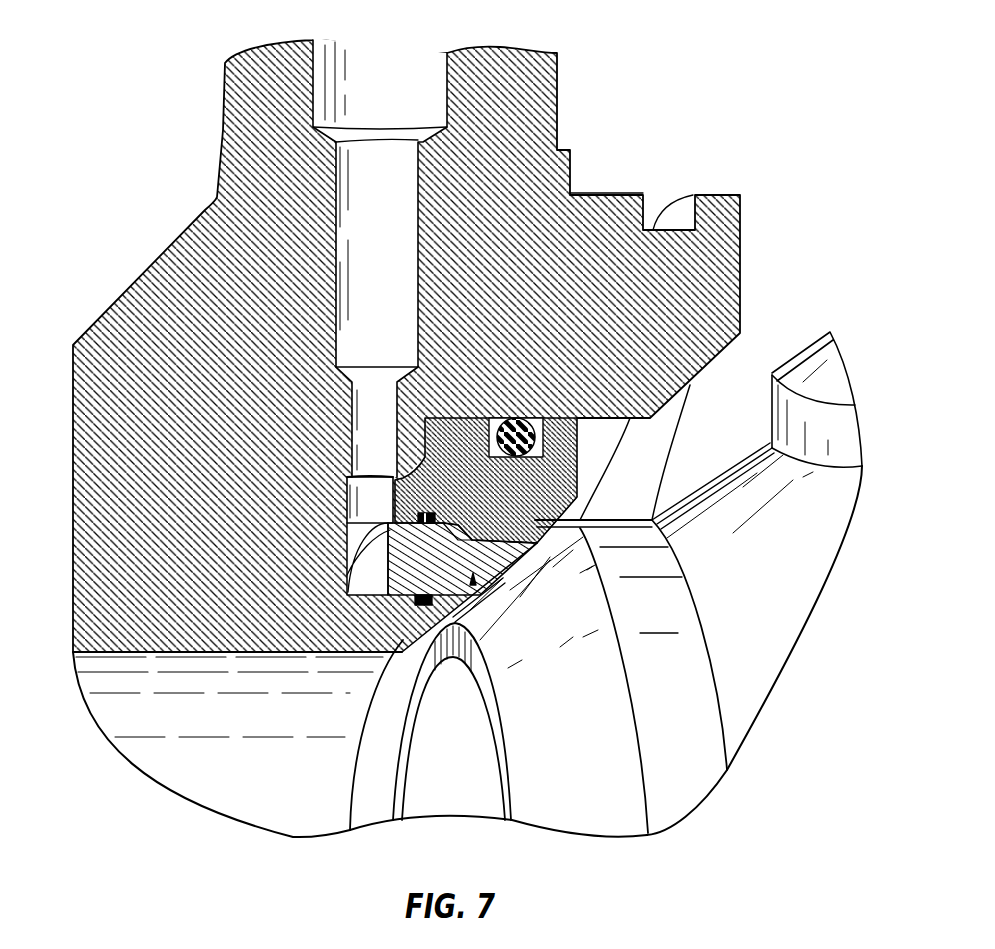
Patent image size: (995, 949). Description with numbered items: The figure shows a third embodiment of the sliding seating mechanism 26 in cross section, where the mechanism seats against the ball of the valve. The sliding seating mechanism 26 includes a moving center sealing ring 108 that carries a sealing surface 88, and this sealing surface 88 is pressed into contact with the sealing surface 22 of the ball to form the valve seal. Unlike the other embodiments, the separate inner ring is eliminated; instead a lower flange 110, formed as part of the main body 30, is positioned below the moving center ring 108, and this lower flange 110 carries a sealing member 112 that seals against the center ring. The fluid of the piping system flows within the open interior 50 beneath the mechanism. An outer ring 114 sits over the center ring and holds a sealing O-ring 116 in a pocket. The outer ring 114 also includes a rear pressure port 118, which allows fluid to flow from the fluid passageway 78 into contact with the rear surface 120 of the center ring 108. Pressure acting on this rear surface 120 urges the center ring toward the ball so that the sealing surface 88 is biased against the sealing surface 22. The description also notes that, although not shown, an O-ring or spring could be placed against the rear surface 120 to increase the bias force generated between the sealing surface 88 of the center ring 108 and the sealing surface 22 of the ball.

The sealing surface of the ball 22 is at (600, 717).
The sliding seating mechanism 26 is at (672, 466).
The main body 30 is at (212, 632).
The open interior 50 is at (275, 796).
The fluid passageway 78 is at (391, 266).
The sealing surface 88 is at (533, 545).
The moving center sealing ring 108 is at (503, 578).
The lower flange 110 is at (400, 642).
The sealing member 112 is at (428, 657).
The outer ring 114 is at (562, 480).
The sealing O-ring 116 is at (573, 428).
The rear pressure port 118 is at (372, 488).
The rear surface 120 is at (353, 593).